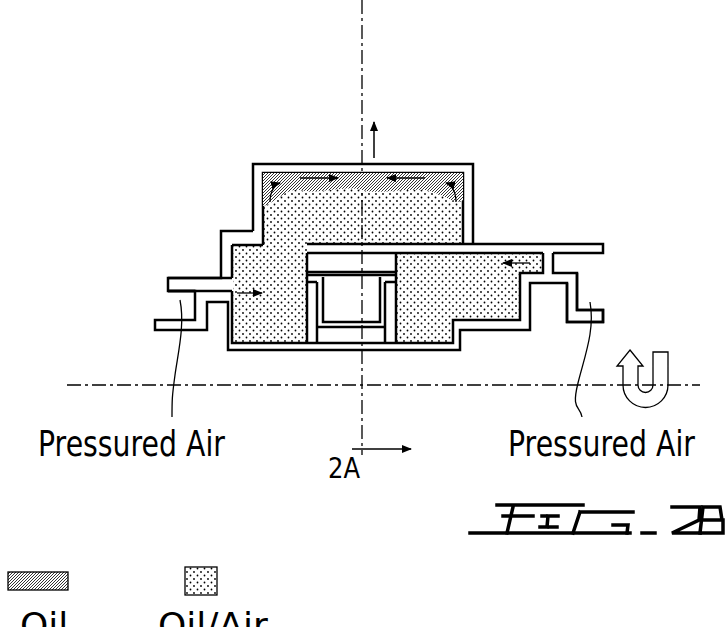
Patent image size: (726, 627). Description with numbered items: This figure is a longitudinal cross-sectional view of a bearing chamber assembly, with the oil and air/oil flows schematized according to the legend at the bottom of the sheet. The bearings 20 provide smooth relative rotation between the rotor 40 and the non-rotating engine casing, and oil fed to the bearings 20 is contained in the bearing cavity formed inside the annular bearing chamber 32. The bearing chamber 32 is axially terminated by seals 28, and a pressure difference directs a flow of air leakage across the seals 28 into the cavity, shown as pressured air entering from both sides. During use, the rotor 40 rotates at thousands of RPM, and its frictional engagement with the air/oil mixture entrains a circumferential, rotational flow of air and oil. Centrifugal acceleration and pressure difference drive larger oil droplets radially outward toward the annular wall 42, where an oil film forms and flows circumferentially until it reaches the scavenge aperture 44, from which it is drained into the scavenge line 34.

The bearings 20 is at (348, 302).
The seals 28 is at (213, 290).
The bearing chamber 32 is at (313, 163).
The scavenge line 34 is at (377, 150).
The rotor 40 is at (592, 310).
The annular wall 42 is at (461, 163).
The scavenge aperture 44 is at (372, 165).